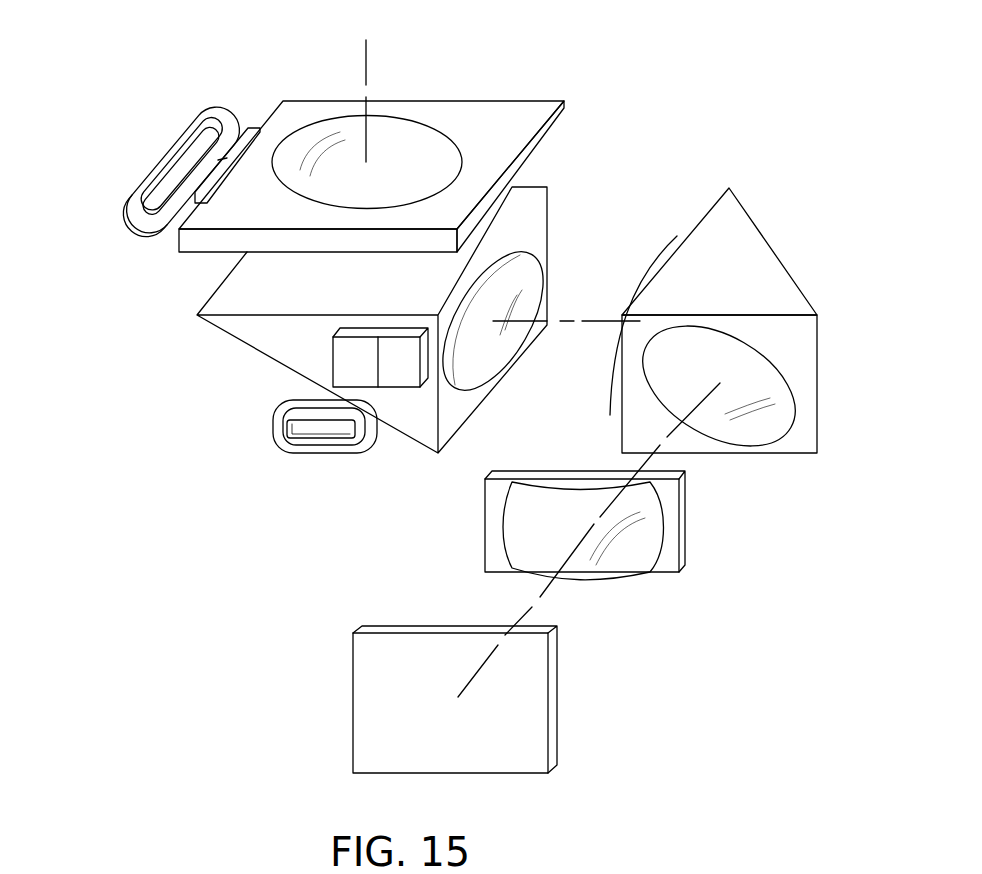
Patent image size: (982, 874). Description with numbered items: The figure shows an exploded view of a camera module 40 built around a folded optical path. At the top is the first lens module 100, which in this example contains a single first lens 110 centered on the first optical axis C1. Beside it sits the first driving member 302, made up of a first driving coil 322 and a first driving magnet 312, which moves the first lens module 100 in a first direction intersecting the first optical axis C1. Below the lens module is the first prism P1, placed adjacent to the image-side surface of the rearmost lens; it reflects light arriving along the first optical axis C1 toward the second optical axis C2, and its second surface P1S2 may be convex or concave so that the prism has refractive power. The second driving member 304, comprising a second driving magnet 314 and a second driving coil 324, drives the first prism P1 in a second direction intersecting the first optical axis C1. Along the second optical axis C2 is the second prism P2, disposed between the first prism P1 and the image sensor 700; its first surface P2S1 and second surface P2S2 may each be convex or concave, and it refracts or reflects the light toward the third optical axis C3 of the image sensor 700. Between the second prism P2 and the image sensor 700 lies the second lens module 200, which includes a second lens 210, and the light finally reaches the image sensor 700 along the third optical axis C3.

The camera module 40 is at (655, 78).
The first lens module 100 is at (533, 122).
The first lens 110 is at (462, 162).
The first optical axis C1 is at (365, 85).
The first driving member 302 is at (68, 242).
The first driving coil 322 is at (143, 220).
The first driving magnet 312 is at (200, 196).
The first prism P1 is at (530, 222).
The second surface of the first prism P1S2 is at (477, 367).
The second optical axis C2 is at (602, 317).
The second driving member 304 is at (182, 370).
The second driving magnet 314 is at (343, 358).
The second driving coil 324 is at (277, 428).
The second prism P2 is at (786, 268).
The first surface of the second prism P2S1 is at (667, 250).
The second surface of the second prism P2S2 is at (763, 420).
The third optical axis C3 is at (540, 600).
The second lens module 200 is at (682, 518).
The second lens 210 is at (647, 553).
The image sensor 700 is at (557, 695).